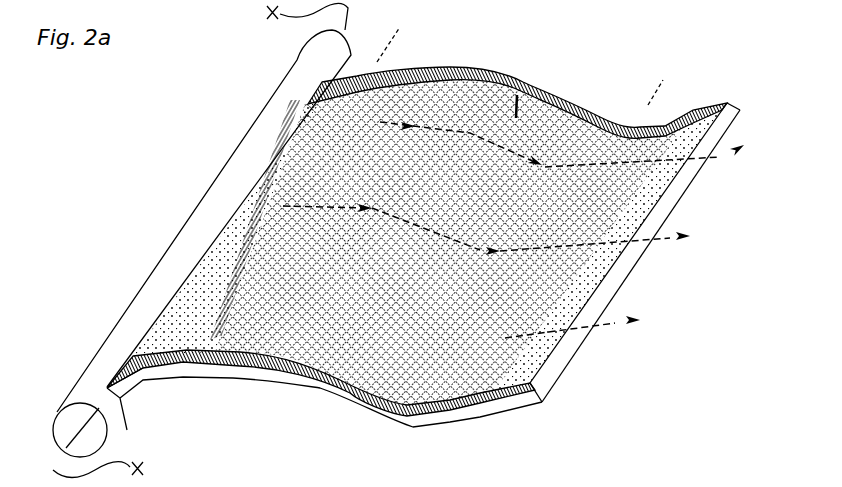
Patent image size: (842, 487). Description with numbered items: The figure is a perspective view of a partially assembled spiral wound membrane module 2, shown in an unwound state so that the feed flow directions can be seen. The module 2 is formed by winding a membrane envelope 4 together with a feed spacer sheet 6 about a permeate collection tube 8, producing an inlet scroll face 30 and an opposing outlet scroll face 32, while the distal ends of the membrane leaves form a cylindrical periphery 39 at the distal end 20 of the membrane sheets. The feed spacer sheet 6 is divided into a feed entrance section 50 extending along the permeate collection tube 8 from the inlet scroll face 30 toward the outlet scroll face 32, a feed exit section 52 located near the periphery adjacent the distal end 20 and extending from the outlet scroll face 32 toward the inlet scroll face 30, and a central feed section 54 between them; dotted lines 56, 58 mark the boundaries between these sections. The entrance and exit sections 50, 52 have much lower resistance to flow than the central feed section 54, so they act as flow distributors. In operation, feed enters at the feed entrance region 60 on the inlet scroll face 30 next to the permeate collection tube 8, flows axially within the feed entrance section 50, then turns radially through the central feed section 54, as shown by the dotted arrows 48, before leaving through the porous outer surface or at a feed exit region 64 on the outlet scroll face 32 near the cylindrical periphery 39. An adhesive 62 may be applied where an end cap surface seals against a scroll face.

The spiral wound membrane module 2 is at (187, 170).
The membrane envelope 4 is at (563, 380).
The feed spacer sheet 6 is at (522, 84).
The permeate collection tube 8 is at (153, 263).
The distal end of membrane sheets 20 is at (637, 258).
The inlet scroll face 30 is at (470, 423).
The outlet scroll face 32 is at (572, 100).
The cylindrical periphery 39 is at (580, 353).
The dotted arrows 48 is at (718, 154).
The feed entrance section 50 is at (282, 143).
The feed exit section 52 is at (540, 322).
The central feed section 54 is at (452, 69).
The dotted line 56 is at (165, 395).
The dotted line 58 is at (445, 420).
The feed entrance region 60 is at (138, 363).
The adhesive 62 is at (400, 84).
The feed exit region 64 is at (708, 100).